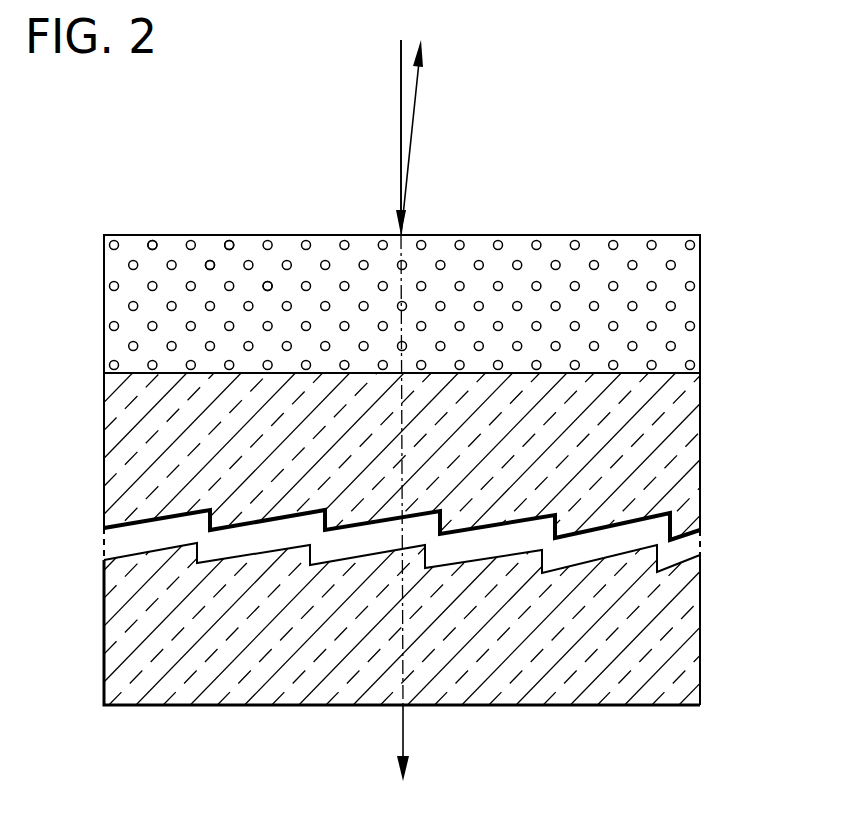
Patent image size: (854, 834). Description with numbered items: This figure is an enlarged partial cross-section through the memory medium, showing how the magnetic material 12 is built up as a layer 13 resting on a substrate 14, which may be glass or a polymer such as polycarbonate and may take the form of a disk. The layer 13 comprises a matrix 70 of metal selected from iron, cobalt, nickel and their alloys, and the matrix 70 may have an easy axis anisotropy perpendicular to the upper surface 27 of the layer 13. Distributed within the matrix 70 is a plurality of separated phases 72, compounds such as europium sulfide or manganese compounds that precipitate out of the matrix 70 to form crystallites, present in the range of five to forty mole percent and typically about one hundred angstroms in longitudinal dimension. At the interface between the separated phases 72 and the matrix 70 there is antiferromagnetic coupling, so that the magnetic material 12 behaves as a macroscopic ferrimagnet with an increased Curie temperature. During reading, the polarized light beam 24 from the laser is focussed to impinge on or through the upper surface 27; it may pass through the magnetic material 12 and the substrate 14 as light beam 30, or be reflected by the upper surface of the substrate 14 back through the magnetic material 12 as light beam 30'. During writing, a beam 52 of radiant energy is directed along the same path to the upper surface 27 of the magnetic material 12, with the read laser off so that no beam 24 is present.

The magnetic material 12 is at (553, 235).
The upper surface 27 is at (402, 203).
The layer 13 is at (700, 300).
The substrate 14 is at (703, 473).
The light beam 24 is at (398, 103).
The beam 52 is at (354, 126).
The light beam 30 is at (447, 743).
The light beam 30' is at (459, 137).
The matrix 70 is at (325, 250).
The separated phases 72 is at (265, 283).